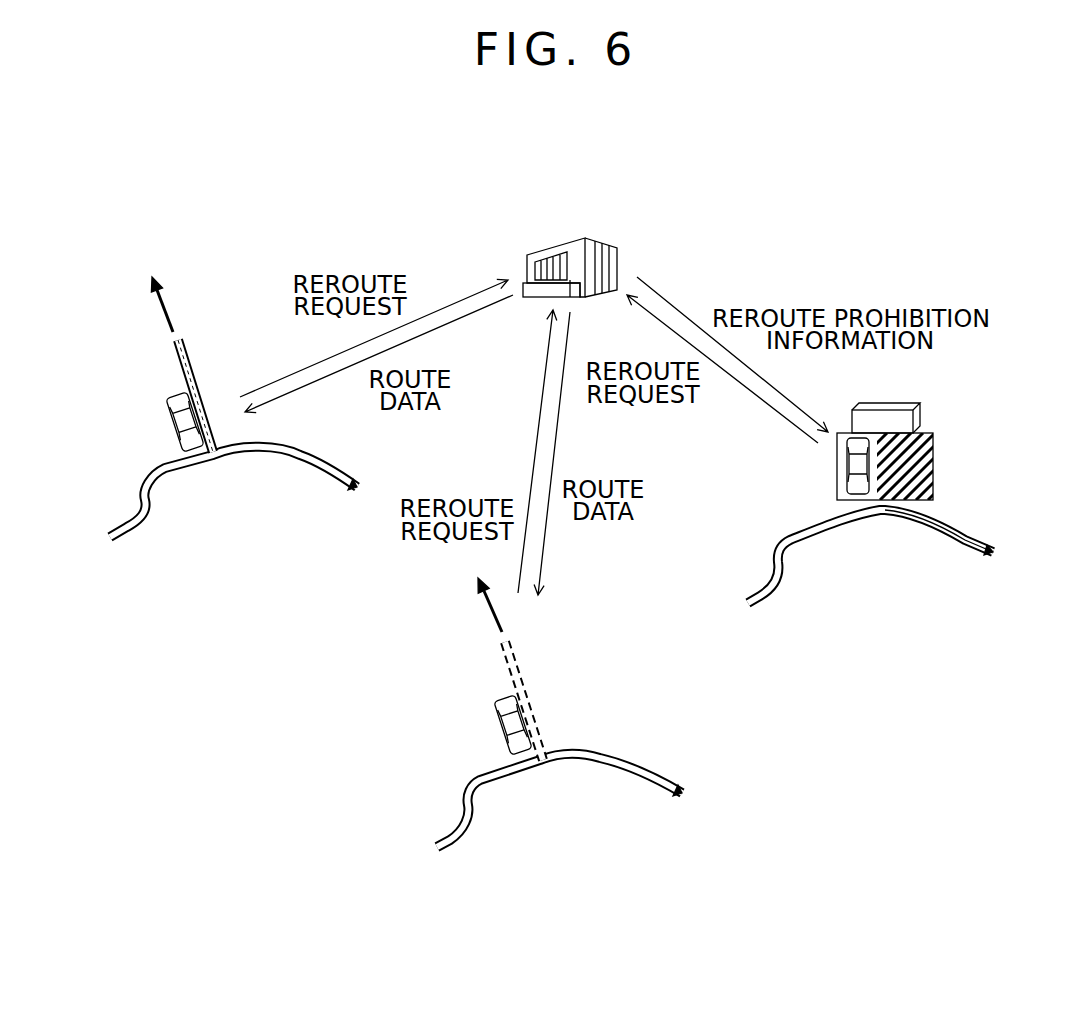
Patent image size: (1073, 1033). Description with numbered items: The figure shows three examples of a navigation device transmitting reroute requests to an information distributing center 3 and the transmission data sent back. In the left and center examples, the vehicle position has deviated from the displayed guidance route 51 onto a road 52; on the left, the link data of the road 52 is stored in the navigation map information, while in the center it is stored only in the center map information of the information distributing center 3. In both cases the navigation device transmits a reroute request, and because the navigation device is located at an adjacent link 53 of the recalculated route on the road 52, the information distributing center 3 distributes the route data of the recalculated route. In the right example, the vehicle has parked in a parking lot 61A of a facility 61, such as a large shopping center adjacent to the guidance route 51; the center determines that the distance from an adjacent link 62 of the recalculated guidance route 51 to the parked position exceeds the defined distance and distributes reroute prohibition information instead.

The information distributing center 3 is at (617, 260).
The guidance route 51 is at (188, 468).
The road 52 is at (205, 378).
The adjacent link 53 is at (183, 365).
The facility 61 is at (895, 405).
The parking lot 61A is at (920, 463).
The adjacent link 62 is at (918, 528).